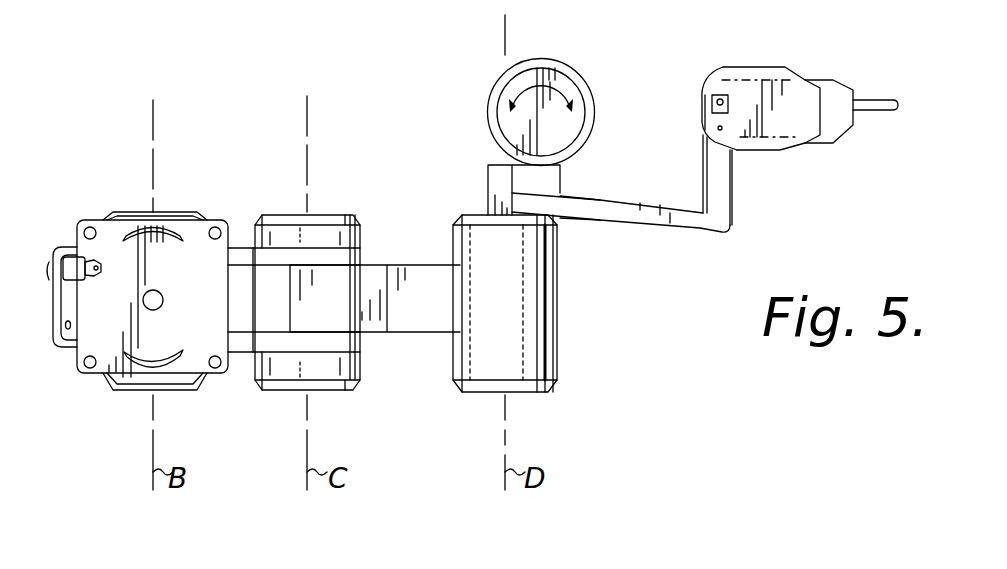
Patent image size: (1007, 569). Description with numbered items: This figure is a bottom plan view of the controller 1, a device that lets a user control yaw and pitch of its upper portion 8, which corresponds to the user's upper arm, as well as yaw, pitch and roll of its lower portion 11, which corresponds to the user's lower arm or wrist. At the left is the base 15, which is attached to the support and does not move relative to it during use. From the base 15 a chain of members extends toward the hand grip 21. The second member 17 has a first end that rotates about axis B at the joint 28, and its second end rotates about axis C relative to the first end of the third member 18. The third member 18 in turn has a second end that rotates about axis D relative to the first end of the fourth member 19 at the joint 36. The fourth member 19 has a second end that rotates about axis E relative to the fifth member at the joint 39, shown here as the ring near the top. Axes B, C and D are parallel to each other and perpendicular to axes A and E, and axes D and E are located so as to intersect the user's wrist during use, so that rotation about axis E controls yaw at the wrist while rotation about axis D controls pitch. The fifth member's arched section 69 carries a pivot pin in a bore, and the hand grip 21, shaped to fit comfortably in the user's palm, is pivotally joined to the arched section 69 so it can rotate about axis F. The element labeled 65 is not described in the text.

The controller 1 is at (120, 428).
The upper portion 8 is at (286, 214).
The lower portion 11 is at (602, 223).
The base 15 is at (107, 231).
The second member 17 is at (238, 360).
The third member 18 is at (405, 318).
The fourth member 19 is at (488, 150).
The hand grip 21 is at (792, 145).
The joint 28 is at (326, 196).
The joint 36 is at (516, 399).
The joint 39 is at (581, 67).
The arm 65 is at (619, 200).
The arched section 69 is at (733, 183).